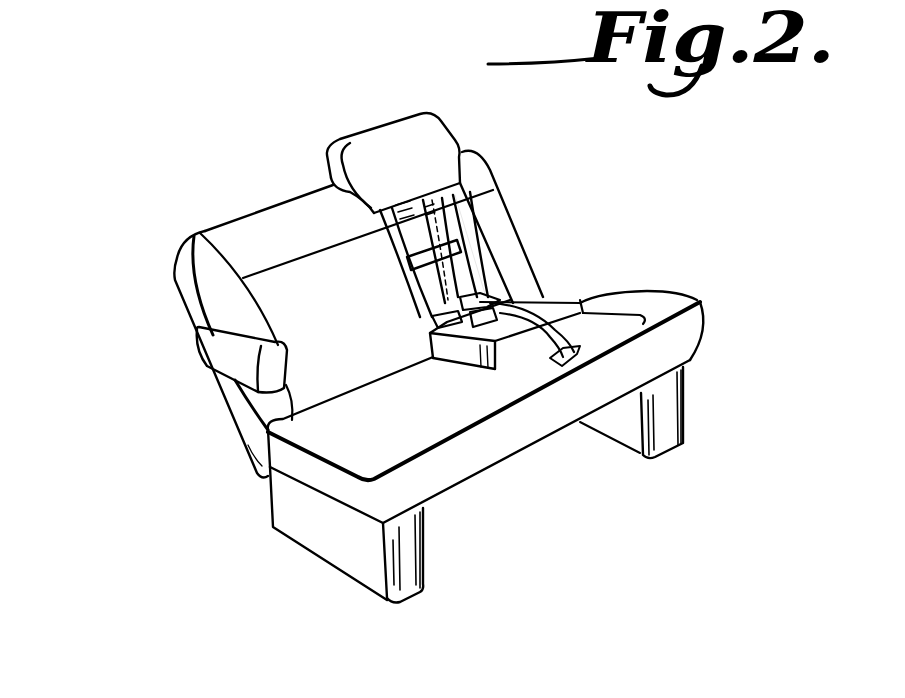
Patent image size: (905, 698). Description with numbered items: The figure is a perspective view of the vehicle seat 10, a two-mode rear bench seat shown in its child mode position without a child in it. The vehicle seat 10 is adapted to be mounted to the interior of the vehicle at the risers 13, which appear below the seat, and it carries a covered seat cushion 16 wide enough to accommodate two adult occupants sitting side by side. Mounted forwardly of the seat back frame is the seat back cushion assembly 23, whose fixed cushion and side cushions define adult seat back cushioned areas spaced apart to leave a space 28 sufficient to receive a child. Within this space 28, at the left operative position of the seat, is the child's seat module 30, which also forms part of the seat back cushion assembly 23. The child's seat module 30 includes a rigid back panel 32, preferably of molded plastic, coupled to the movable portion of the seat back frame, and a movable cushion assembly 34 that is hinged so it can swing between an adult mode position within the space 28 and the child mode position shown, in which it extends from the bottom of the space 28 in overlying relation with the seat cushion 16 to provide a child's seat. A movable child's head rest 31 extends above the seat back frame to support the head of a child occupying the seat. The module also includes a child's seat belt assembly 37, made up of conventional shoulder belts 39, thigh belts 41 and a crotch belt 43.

The vehicle seat 10 is at (594, 227).
The risers 13 is at (418, 557).
The seat cushion 16 is at (476, 420).
The seat back cushion assembly 23 is at (170, 256).
The space 28 is at (477, 243).
The child's seat module 30 is at (303, 157).
The child's head rest 31 is at (377, 115).
The back panel 32 is at (407, 250).
The movable cushion assembly 34 is at (458, 376).
The child's seat belt assembly 37 is at (478, 273).
The shoulder belts 39 is at (488, 192).
The thigh belts 41 is at (428, 316).
The crotch belt 43 is at (633, 333).